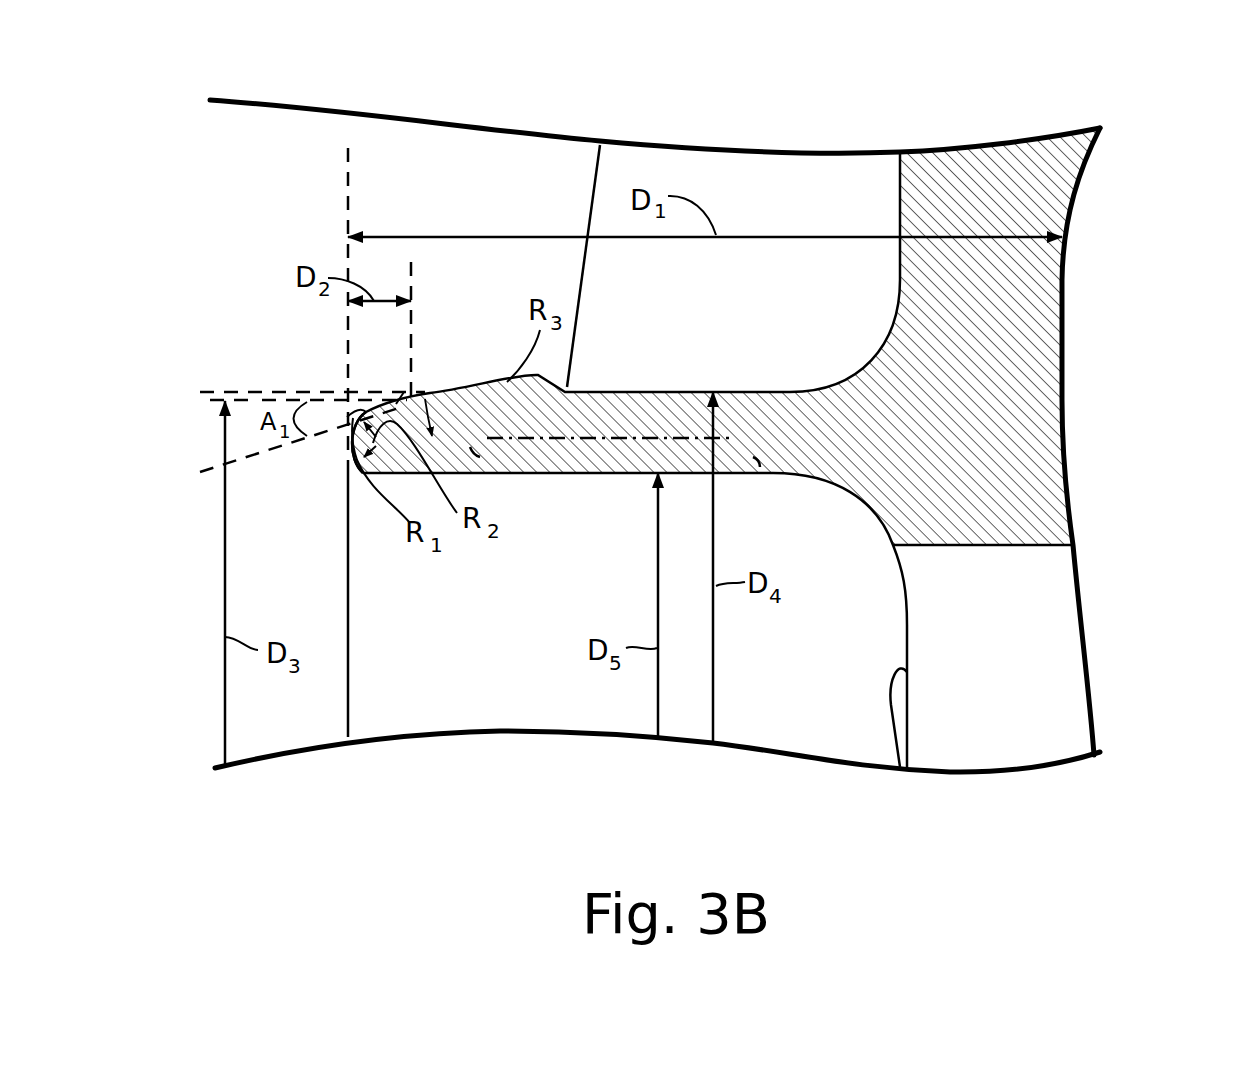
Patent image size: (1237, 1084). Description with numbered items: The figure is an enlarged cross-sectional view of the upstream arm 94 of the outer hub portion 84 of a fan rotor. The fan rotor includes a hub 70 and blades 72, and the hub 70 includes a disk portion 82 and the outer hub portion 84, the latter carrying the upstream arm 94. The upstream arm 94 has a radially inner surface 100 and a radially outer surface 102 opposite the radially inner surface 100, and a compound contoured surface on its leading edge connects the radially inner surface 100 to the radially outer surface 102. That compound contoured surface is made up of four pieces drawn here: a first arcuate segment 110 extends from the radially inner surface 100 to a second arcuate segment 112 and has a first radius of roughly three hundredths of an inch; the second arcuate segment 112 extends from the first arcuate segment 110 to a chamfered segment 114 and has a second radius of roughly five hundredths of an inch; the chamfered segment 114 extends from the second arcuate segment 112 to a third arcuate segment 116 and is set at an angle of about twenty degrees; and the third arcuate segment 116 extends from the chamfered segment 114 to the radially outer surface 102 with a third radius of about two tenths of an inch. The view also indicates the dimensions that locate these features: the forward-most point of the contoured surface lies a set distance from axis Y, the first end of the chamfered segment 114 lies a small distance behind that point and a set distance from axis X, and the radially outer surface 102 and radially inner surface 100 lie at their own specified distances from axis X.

The hub 70 is at (1066, 412).
The blades 72 is at (797, 183).
The disk portion 82 is at (1015, 665).
The outer hub portion 84 is at (817, 445).
The upstream arm 94 is at (742, 413).
The radially inner surface 100 is at (573, 473).
The radially outer surface 102 is at (628, 392).
The first arcuate segment 110 is at (350, 435).
The second arcuate segment 112 is at (347, 417).
The chamfered segment 114 is at (404, 392).
The third arcuate segment 116 is at (437, 385).